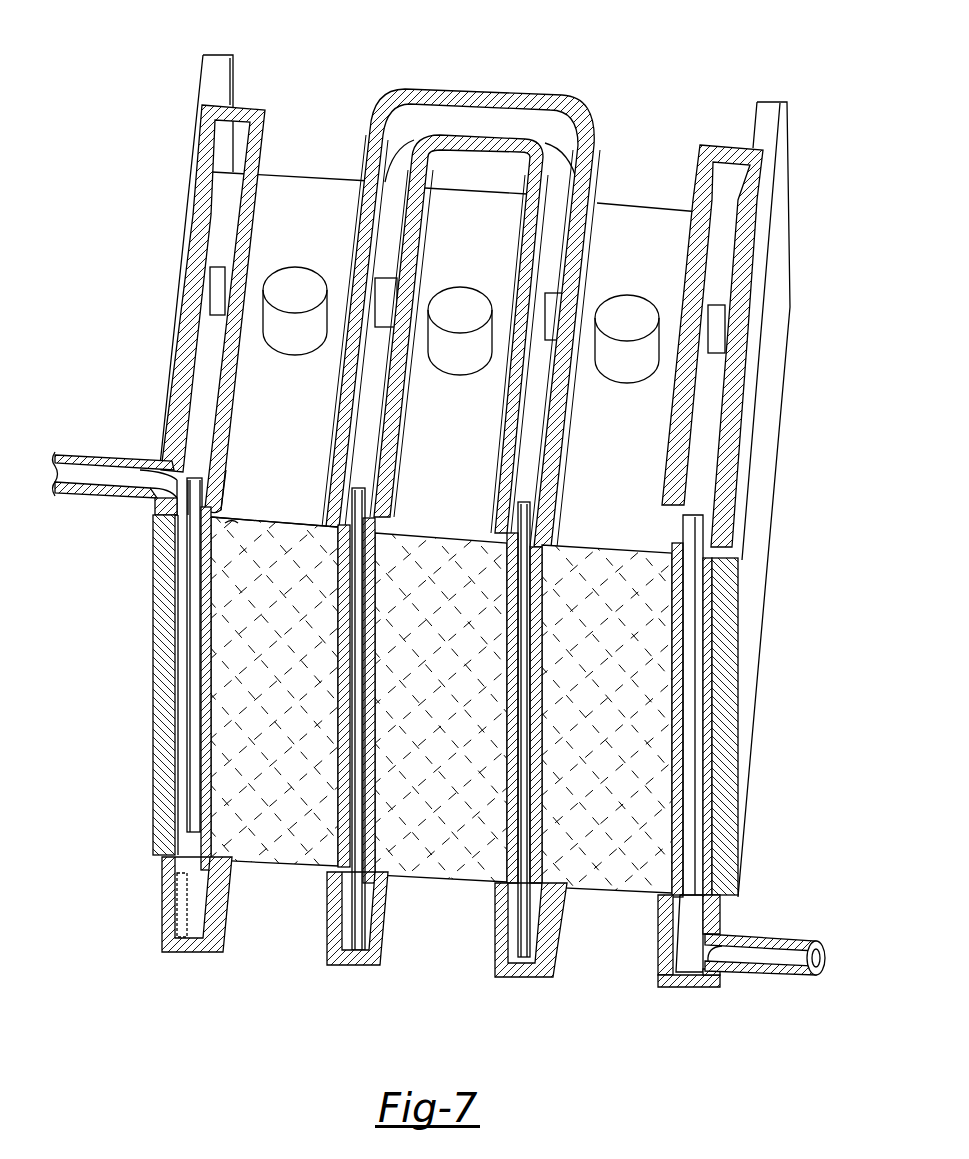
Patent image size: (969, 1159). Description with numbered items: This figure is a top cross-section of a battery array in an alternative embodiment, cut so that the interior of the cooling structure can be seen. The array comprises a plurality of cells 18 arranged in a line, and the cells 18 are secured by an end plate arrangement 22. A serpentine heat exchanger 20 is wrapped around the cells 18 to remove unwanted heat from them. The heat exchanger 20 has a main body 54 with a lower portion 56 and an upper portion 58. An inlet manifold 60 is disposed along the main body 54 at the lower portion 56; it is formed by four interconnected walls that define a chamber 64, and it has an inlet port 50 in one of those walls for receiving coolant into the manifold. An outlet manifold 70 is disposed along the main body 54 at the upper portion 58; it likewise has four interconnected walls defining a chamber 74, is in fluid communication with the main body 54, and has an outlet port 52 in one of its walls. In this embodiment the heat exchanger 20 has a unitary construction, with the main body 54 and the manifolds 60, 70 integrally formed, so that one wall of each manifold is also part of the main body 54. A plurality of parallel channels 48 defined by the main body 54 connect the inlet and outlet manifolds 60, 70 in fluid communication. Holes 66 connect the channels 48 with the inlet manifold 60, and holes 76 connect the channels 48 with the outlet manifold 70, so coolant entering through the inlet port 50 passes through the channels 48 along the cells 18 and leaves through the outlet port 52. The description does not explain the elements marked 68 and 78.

The cells 18 is at (285, 670).
The serpentine heat exchanger 20 is at (585, 127).
The end plate arrangement 22 is at (202, 80).
The parallel channels 48 is at (192, 574).
The inlet port 50 is at (800, 940).
The outlet port 52 is at (62, 455).
The main body 54 is at (175, 622).
The lower portion 56 is at (706, 893).
The upper portion 58 is at (704, 562).
The inlet manifold 60 is at (160, 872).
The chamber 64 is at (187, 927).
The holes (ports) 66 is at (358, 875).
The outlet elbow 68 is at (712, 950).
The outlet manifold 70 is at (485, 92).
The chamber 74 is at (232, 135).
The holes (ports) 76 is at (360, 503).
The inlet elbow 78 is at (143, 478).